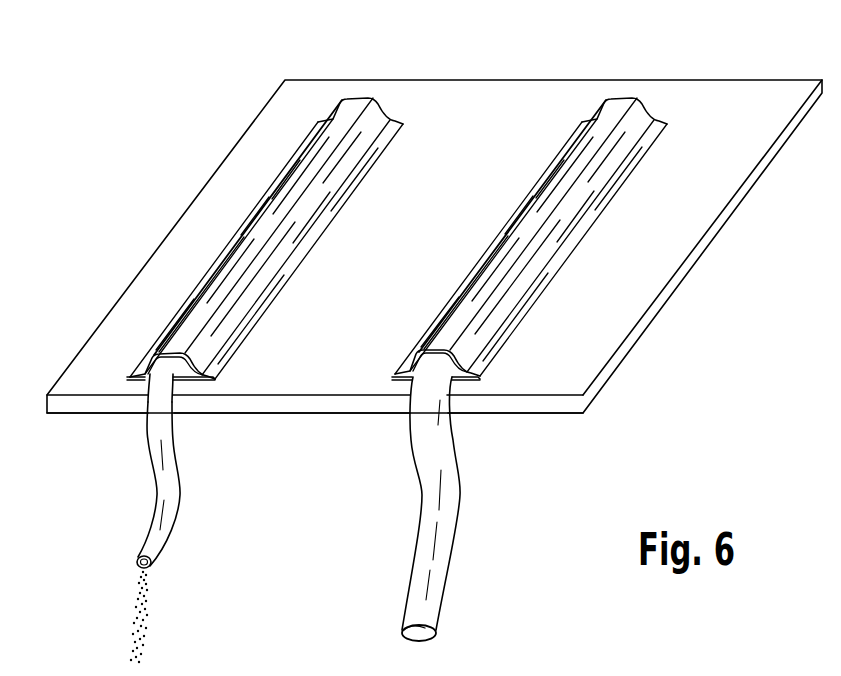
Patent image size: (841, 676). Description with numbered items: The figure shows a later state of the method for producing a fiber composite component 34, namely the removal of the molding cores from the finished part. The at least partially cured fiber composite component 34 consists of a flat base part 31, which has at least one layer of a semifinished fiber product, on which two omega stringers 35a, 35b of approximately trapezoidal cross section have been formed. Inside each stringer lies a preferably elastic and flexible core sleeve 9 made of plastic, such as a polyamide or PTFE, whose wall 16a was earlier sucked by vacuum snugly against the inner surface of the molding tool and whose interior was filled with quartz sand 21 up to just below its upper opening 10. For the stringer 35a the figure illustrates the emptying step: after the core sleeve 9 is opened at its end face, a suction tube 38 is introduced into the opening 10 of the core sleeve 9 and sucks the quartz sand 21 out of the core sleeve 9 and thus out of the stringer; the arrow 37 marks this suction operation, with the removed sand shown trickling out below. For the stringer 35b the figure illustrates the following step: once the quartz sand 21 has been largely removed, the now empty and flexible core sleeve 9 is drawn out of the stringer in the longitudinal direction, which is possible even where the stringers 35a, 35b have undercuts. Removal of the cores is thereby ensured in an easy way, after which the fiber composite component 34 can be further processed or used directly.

The core sleeve 9 is at (447, 513).
The wall of the core sleeve 16a is at (167, 353).
The opening of the core sleeve 10 is at (157, 357).
The quartz sand 21 is at (145, 630).
The base part 31 is at (583, 340).
The fiber composite component 34 is at (163, 152).
The stringer 35a is at (357, 105).
The stringer 35b is at (618, 106).
The filling device 37 is at (118, 489).
The suction tube 38 is at (168, 472).